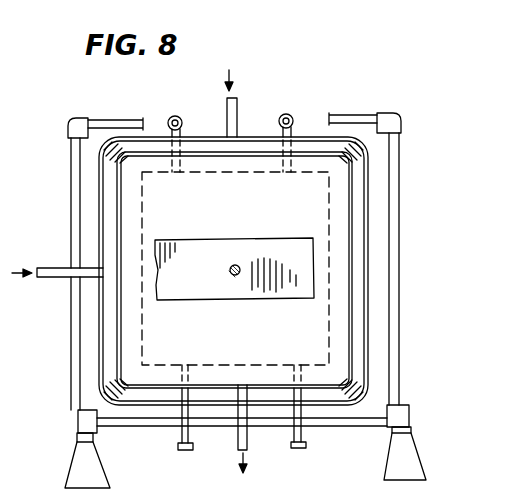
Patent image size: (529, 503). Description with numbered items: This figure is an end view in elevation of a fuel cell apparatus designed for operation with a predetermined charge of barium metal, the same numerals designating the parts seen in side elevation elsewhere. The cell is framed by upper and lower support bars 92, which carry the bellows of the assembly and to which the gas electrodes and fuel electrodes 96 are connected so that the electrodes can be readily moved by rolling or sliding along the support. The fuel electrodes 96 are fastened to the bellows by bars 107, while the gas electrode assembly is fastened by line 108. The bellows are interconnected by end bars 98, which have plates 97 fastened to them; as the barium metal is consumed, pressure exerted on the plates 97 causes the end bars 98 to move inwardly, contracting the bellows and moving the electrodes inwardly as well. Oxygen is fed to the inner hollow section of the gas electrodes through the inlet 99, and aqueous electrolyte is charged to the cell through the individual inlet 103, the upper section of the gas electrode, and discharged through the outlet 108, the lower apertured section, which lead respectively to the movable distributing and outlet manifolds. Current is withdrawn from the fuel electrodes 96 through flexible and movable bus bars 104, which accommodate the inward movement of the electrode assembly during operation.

The support bars 92 is at (143, 124).
The fuel electrodes 96 is at (142, 208).
The plates 97 is at (262, 246).
The end bars 98 is at (227, 193).
The inlet 99 is at (52, 278).
The inlet 103 is at (237, 100).
The bus bars 104 is at (187, 451).
The bars 107 is at (183, 124).
The outlet 108 is at (249, 432).